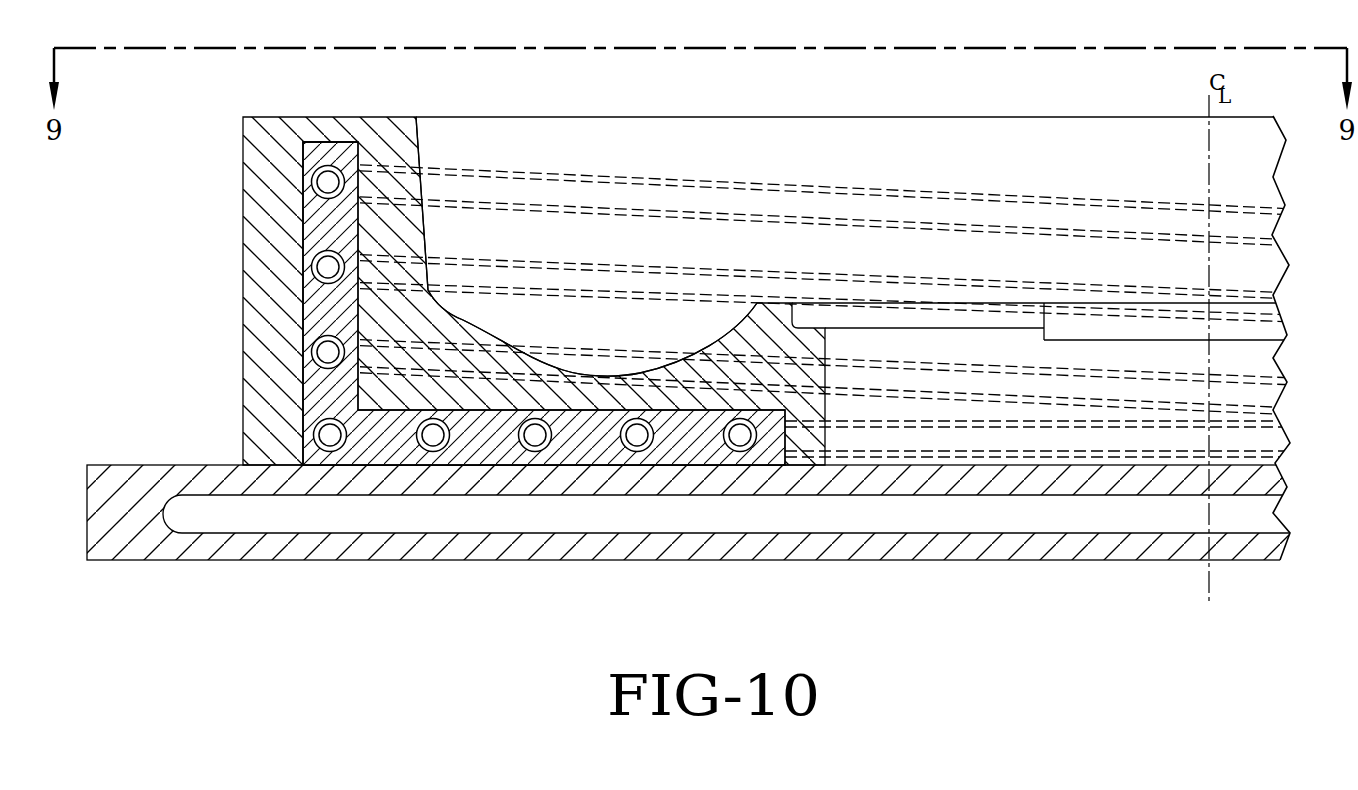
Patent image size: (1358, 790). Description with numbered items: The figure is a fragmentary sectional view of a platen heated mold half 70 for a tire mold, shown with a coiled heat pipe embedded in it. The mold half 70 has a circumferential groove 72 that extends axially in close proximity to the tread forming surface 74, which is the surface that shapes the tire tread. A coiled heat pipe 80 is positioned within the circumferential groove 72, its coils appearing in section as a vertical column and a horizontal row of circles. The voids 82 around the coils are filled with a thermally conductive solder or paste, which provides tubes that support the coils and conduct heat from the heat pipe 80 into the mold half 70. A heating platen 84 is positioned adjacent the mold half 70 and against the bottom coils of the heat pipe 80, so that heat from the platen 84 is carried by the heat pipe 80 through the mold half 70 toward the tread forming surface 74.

The platen heated mold half 70 is at (270, 162).
The circumferential groove 72 is at (307, 380).
The tread forming surface 74 is at (423, 226).
The coiled heat pipe 80 is at (318, 262).
The voids 82 is at (325, 313).
The heating platen 84 is at (202, 548).